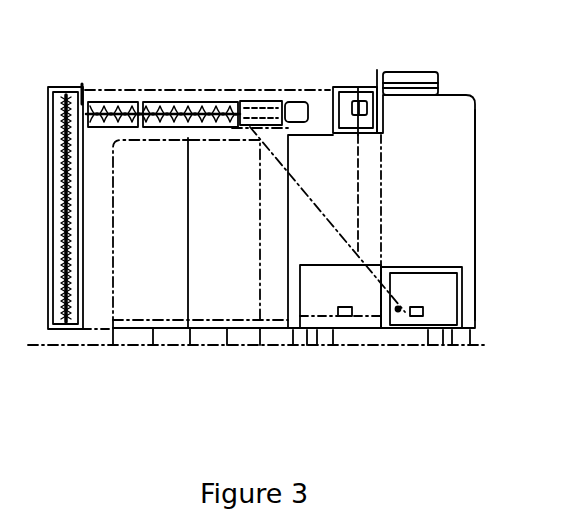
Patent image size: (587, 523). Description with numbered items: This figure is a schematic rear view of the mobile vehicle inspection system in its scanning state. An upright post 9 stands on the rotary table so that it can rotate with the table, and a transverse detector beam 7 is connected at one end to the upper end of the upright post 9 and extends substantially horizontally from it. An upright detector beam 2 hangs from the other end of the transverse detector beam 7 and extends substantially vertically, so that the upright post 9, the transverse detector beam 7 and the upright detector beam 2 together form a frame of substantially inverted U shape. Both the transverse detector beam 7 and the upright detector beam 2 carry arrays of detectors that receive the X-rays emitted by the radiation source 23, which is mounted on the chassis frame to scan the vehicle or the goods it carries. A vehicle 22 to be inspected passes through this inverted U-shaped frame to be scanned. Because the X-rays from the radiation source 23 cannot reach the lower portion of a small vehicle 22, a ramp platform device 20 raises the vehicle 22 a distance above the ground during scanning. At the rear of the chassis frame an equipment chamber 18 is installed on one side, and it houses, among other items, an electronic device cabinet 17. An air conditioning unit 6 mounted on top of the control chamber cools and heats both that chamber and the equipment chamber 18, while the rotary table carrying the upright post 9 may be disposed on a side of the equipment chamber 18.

The upright detector beam 2 is at (49, 330).
The transverse detector beam 7 is at (164, 105).
The upright post 9 is at (353, 157).
The air conditioning unit 6 is at (402, 72).
The electronic device cabinet 17 is at (462, 173).
The equipment chamber 18 is at (477, 227).
The ramp platform device 20 is at (133, 334).
The vehicle to be inspected 22 is at (238, 256).
The radiation source 23 is at (411, 313).